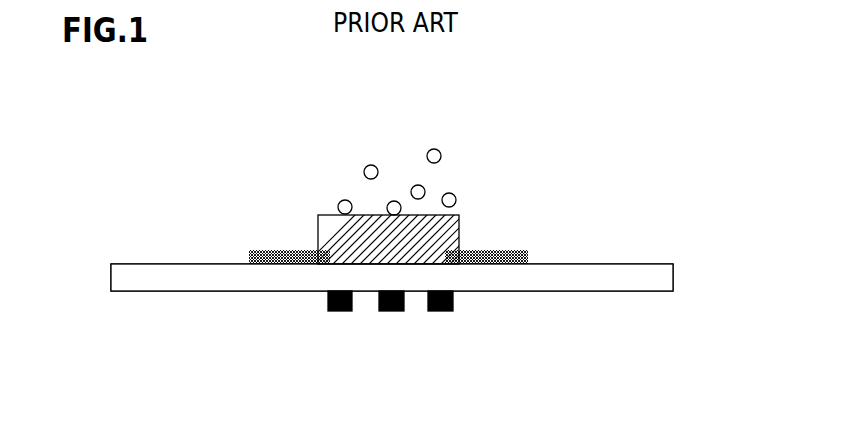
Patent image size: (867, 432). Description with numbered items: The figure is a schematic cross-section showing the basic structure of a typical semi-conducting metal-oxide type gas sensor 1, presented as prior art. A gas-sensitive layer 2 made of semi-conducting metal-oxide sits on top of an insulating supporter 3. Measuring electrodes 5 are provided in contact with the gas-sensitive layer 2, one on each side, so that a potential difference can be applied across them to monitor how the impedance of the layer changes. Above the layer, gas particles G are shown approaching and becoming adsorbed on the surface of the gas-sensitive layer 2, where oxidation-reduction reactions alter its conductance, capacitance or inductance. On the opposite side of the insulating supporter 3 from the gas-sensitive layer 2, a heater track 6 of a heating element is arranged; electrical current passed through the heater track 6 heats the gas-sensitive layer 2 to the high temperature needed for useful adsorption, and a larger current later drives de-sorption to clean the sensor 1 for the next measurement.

The semi-conducting metal-oxide type gas sensor 1 is at (645, 100).
The gas-sensitive layer 2 is at (318, 215).
The insulating supporter 3 is at (647, 277).
The measuring electrodes 5 is at (247, 238).
The heater track 6 is at (423, 323).
The gas particles G is at (457, 195).